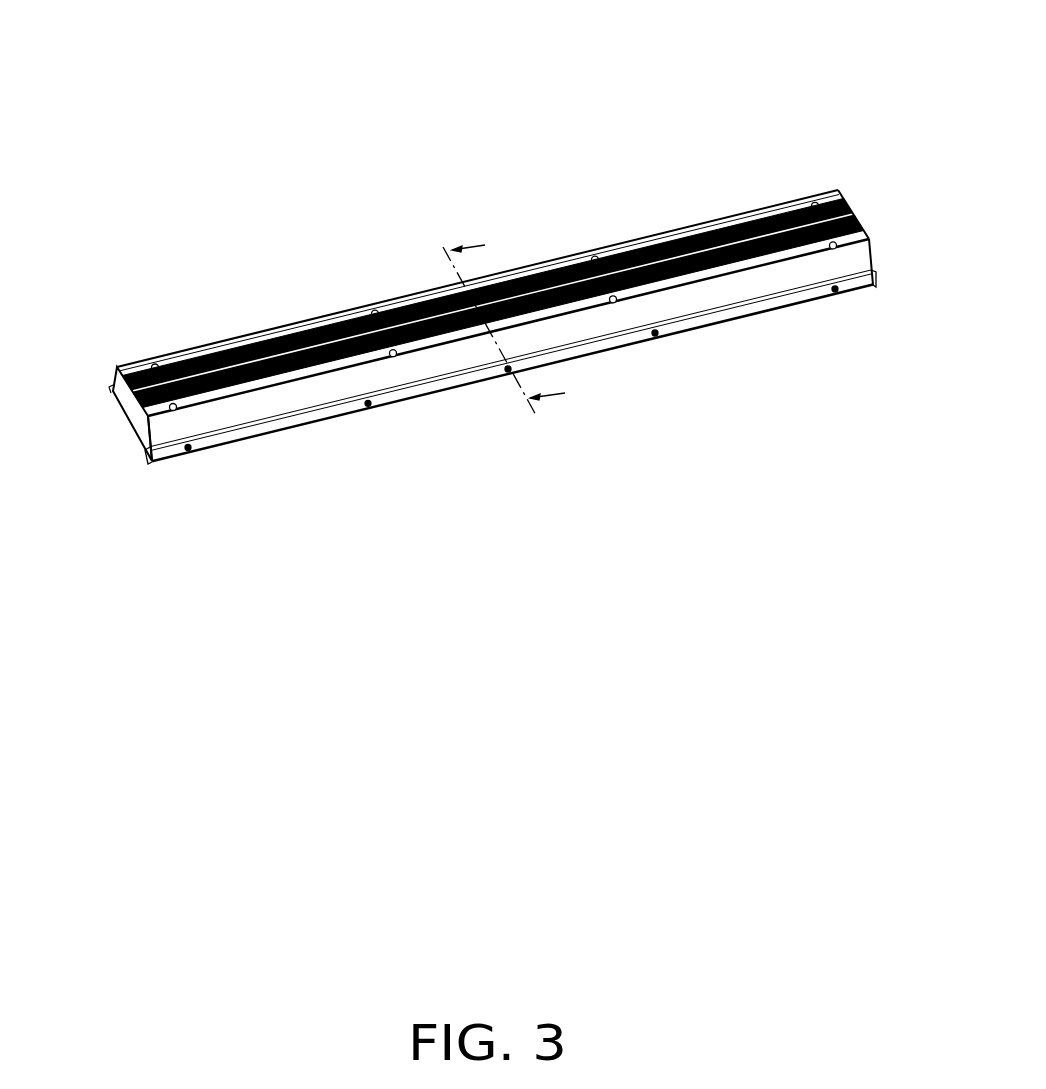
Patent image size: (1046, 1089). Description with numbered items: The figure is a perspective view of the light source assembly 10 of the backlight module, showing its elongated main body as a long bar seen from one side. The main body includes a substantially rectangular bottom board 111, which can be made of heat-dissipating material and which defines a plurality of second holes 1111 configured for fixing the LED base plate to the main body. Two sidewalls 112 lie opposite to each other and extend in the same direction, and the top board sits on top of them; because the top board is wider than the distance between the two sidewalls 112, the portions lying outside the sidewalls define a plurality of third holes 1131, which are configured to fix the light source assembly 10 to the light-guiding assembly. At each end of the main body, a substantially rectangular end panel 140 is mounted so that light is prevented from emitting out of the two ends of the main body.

The light source assembly 10 is at (482, 43).
The bottom board 111 is at (843, 201).
The second holes 1111 is at (153, 366).
The sidewalls 112 is at (838, 271).
The third holes 1131 is at (392, 405).
The end panels 140 is at (133, 411).